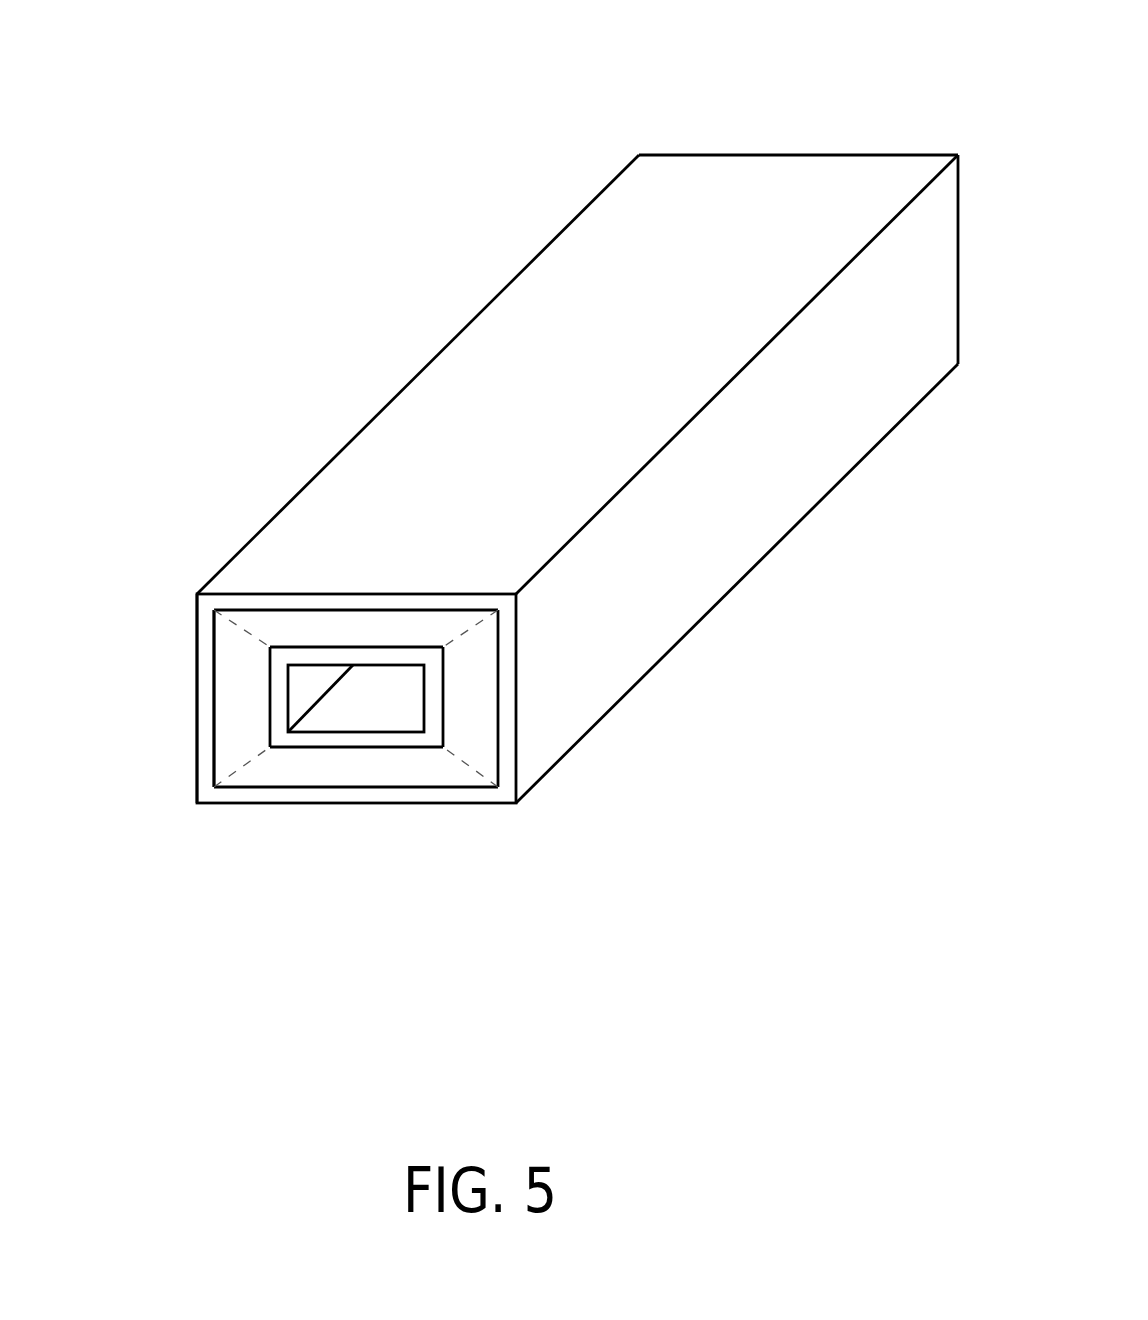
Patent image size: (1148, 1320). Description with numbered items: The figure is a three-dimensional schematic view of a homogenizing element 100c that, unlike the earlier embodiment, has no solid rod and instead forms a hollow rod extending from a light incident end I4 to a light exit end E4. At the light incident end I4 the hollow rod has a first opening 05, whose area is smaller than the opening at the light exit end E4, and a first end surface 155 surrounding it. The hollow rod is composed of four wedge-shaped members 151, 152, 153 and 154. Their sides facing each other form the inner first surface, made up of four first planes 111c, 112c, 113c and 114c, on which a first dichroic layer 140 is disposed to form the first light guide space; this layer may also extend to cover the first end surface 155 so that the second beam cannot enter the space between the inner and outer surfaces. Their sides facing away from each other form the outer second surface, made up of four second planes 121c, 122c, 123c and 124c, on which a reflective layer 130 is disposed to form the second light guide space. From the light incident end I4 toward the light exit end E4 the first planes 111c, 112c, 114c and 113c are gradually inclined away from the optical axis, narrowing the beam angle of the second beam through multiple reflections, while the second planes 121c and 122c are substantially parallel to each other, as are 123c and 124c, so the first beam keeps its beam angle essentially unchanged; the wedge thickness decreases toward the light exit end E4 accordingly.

The homogenizing element 100c is at (273, 114).
The light exit end E4 is at (676, 147).
The reflective layer 130 is at (205, 755).
The light incident end I4 is at (194, 622).
The first end surface 155 is at (222, 718).
The second plane 123c is at (213, 637).
The second plane 121c is at (390, 608).
The second plane 122c is at (413, 789).
The second plane 124c is at (502, 728).
The first plane 111c is at (360, 645).
The first plane 113c is at (270, 713).
The first plane 112c is at (357, 749).
The first plane 114c is at (445, 697).
The first dichroic layer 140 is at (303, 742).
The first opening 05 is at (305, 694).
The wedge-shaped member 153 is at (235, 665).
The wedge-shaped member 151 is at (442, 623).
The wedge-shaped member 152 is at (318, 775).
The wedge-shaped member 154 is at (483, 662).